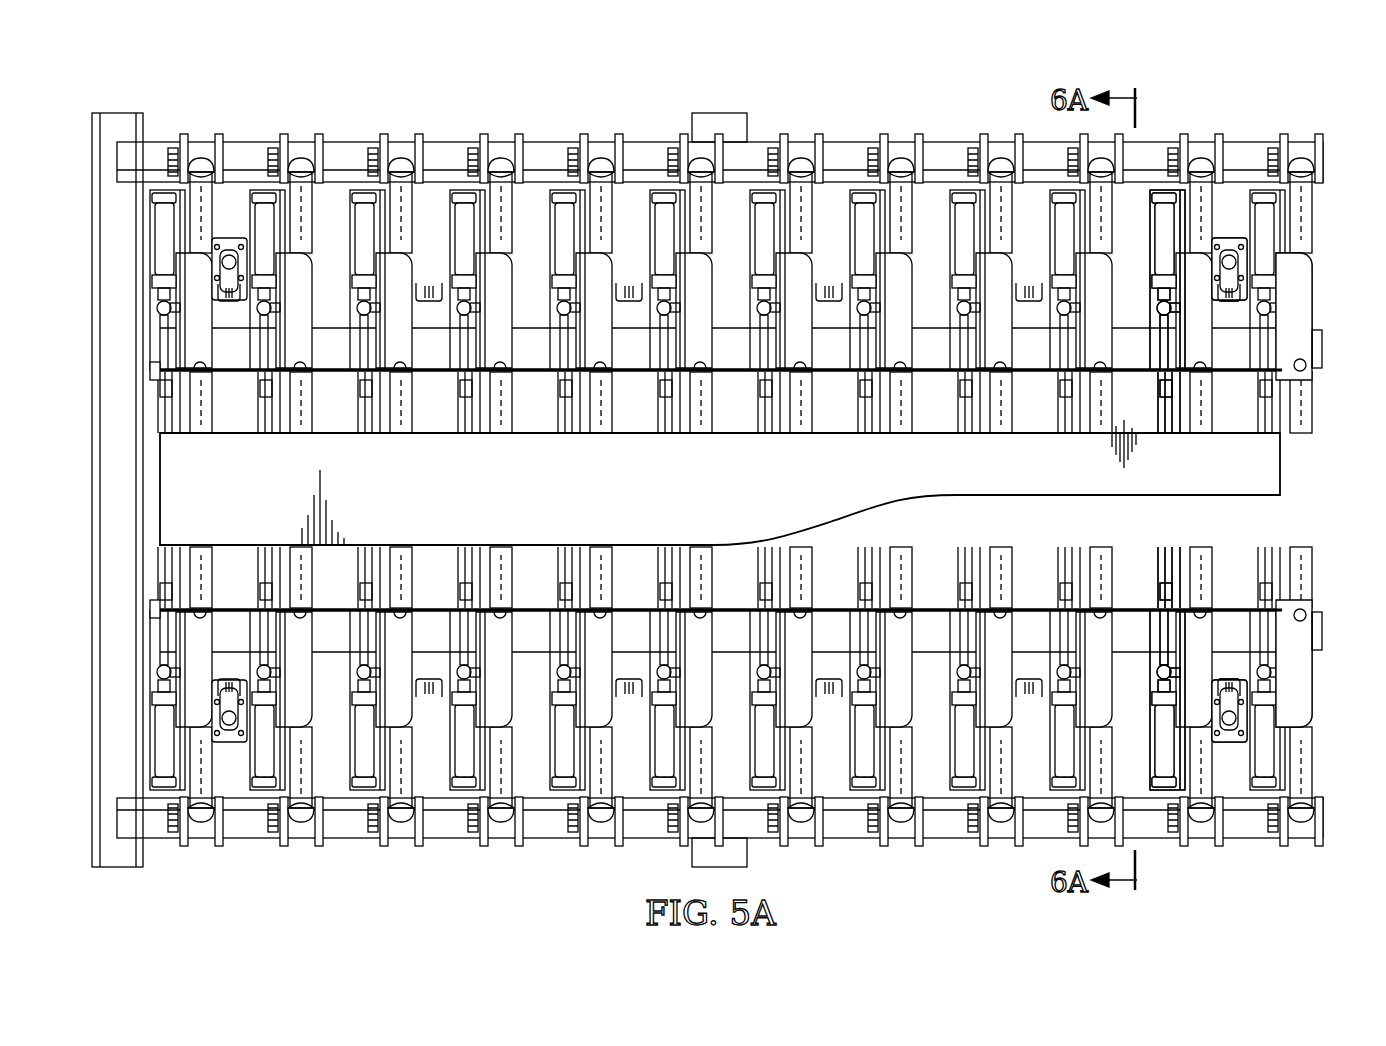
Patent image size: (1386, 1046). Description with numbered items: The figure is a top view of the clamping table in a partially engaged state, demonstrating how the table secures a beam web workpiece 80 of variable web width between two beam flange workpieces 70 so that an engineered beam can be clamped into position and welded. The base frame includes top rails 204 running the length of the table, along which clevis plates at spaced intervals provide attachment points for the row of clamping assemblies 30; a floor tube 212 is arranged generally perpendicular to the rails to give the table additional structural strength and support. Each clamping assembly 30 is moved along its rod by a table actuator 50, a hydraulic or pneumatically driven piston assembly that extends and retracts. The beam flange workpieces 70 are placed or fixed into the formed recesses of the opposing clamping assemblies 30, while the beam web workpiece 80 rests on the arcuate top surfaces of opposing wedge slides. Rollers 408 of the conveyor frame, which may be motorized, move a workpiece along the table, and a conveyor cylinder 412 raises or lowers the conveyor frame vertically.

The top rail 204 is at (446, 142).
The floor tube 212 is at (92, 258).
The clamping assembly 30 is at (1156, 225).
The conveyor cylinder 412 is at (1234, 238).
The table actuator 50 is at (1320, 216).
The beam flange workpiece 70 is at (1230, 378).
The beam web workpiece 80 is at (152, 452).
The roller 408 is at (1030, 418).